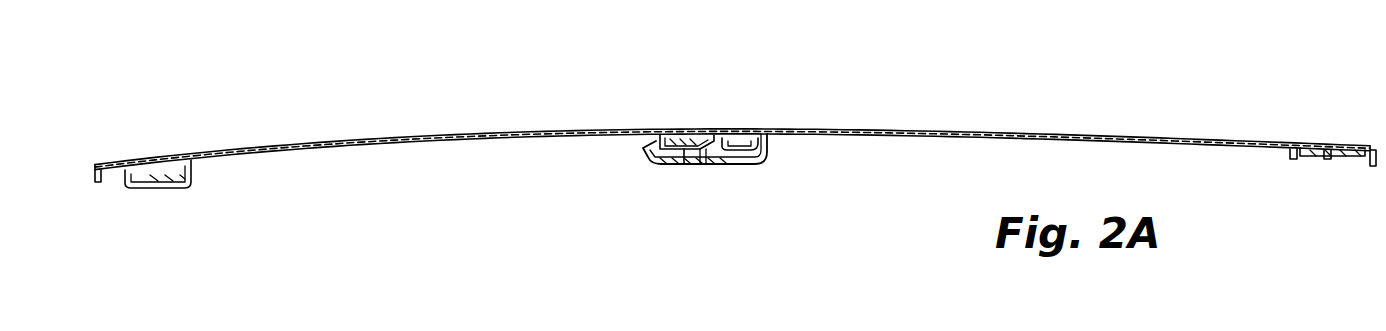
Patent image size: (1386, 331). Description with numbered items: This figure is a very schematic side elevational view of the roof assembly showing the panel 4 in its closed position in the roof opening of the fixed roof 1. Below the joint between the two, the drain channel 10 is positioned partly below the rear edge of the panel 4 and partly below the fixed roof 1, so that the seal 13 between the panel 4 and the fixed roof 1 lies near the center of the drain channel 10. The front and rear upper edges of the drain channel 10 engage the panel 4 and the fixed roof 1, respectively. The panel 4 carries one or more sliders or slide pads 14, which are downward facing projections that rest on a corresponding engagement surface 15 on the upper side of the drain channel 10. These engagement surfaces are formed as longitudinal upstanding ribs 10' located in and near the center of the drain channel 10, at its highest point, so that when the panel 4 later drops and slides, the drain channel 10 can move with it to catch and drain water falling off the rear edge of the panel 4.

The fixed roof 1 is at (802, 129).
The panel 4 is at (538, 129).
The drain channel 10 is at (712, 183).
The longitudinal upstanding ribs 10' is at (750, 106).
The seal 13 is at (704, 134).
The slide pads 14 is at (684, 165).
The engagement surface 15 is at (706, 165).